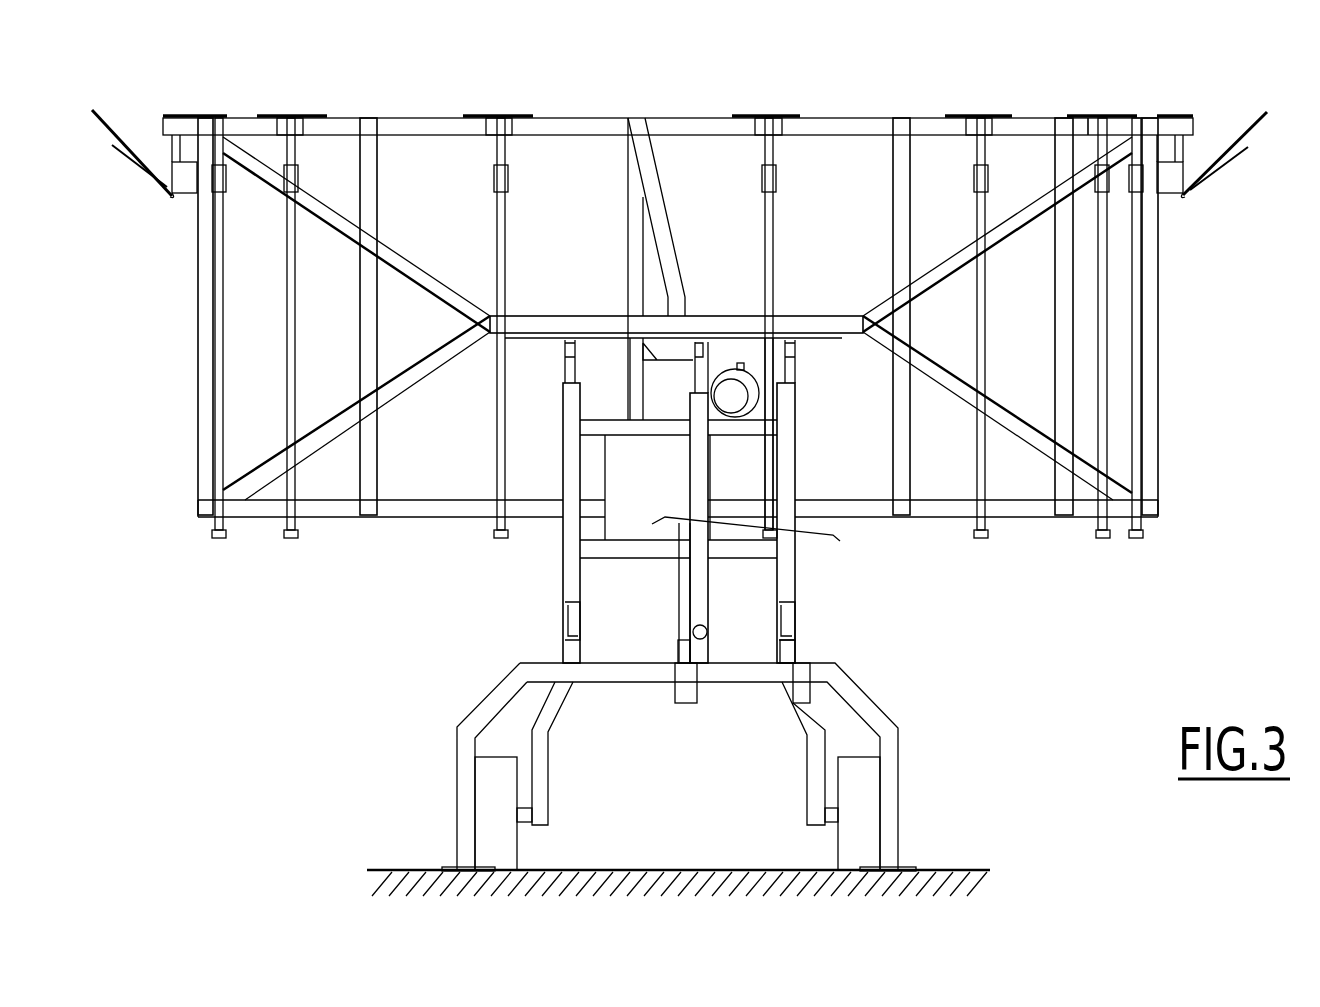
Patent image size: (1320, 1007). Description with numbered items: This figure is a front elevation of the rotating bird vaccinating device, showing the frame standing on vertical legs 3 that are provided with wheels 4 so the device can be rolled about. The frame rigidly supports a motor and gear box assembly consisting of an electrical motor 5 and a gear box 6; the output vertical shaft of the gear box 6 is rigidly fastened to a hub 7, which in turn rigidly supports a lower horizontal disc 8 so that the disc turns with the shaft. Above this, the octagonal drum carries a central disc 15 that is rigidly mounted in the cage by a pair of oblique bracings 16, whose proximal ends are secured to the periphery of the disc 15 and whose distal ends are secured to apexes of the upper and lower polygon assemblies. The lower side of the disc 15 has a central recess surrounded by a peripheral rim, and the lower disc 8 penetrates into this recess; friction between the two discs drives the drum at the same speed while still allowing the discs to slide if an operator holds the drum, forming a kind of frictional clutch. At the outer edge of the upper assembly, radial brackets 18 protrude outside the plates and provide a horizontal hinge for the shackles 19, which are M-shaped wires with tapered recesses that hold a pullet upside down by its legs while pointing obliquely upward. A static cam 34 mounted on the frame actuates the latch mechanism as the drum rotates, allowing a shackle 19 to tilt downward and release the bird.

The vertical legs 3 is at (465, 795).
The wheels 4 is at (840, 845).
The electrical motor 5 is at (738, 403).
The gear box 6 is at (657, 388).
The hub 7 is at (672, 355).
The lower horizontal disc 8 is at (520, 340).
The central disc 15 is at (793, 317).
The oblique bracings 16 is at (403, 243).
The radial brackets 18 is at (1163, 118).
The shackle 19 is at (1255, 120).
The static cam 34 is at (770, 530).